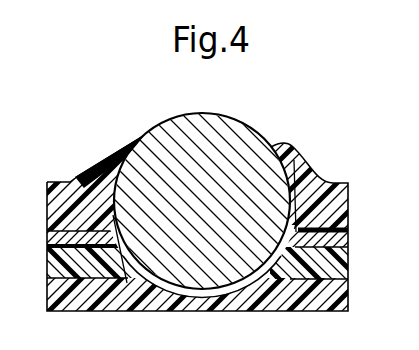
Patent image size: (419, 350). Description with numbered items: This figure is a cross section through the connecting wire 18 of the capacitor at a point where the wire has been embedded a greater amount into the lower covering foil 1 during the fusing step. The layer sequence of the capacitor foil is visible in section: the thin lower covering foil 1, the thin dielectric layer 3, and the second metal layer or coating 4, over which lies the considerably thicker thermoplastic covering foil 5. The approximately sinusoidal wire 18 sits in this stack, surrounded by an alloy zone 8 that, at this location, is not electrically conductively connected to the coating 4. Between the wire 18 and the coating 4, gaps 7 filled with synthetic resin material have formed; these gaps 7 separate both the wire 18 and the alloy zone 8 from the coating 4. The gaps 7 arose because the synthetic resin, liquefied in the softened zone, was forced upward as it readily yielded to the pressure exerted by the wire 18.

The connecting wire 18 is at (240, 130).
The thermoplastic covering foil 5 is at (58, 196).
The second metal layer 4 is at (60, 242).
The thin dielectric layer 3 is at (58, 262).
The gaps 7 is at (304, 217).
The first covering foil 1 is at (337, 306).
The alloy zone 8 is at (201, 297).